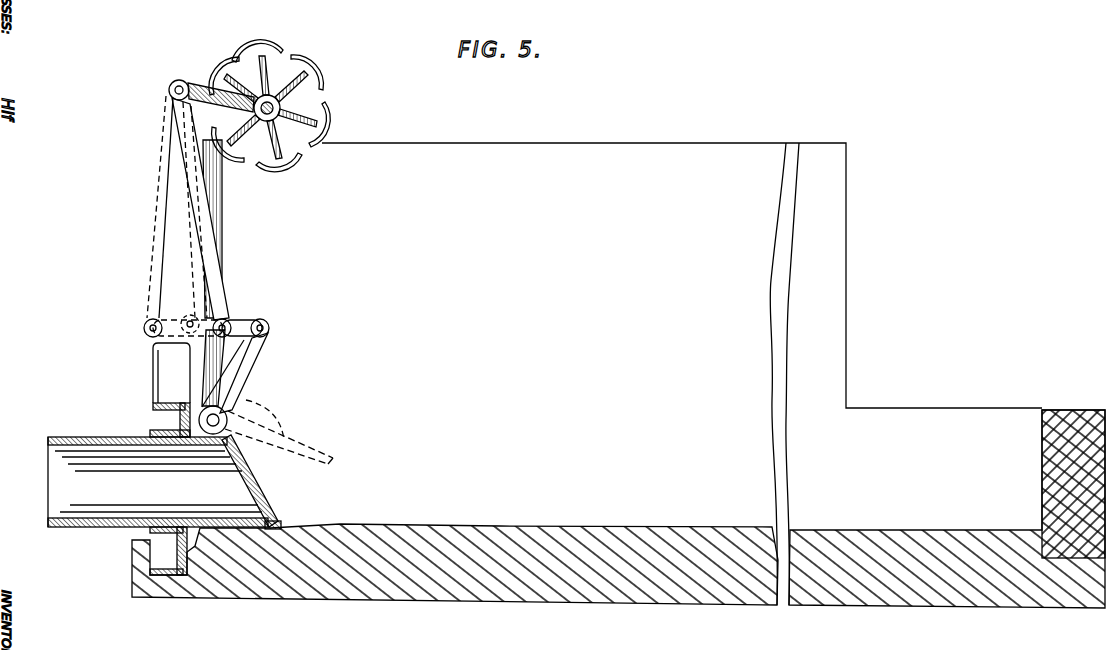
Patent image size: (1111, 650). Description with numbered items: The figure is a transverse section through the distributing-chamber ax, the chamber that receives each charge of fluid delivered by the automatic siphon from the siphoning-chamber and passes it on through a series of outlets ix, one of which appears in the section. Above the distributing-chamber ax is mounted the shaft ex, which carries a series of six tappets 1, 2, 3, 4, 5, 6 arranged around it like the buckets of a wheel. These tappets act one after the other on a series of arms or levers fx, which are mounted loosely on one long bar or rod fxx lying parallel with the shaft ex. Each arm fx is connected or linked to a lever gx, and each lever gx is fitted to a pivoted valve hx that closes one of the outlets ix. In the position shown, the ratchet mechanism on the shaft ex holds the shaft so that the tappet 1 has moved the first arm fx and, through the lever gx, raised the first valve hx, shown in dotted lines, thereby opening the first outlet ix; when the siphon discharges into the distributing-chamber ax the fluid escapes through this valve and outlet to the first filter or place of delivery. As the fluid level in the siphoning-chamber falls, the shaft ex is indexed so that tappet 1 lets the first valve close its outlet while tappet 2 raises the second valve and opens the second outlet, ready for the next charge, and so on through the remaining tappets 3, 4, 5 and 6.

The tappet 1 is at (229, 80).
The tappet 2 is at (236, 151).
The tappet 3 is at (281, 152).
The tappet 4 is at (311, 124).
The tappet 5 is at (301, 72).
The tappet 6 is at (257, 60).
The shaft ex is at (284, 106).
The arm or lever fx is at (177, 153).
The bar or rod fxx is at (169, 92).
The lever gx is at (244, 372).
The pivoted valve hx is at (262, 497).
The outlet ix is at (158, 482).
The distributing-chamber ax is at (618, 509).